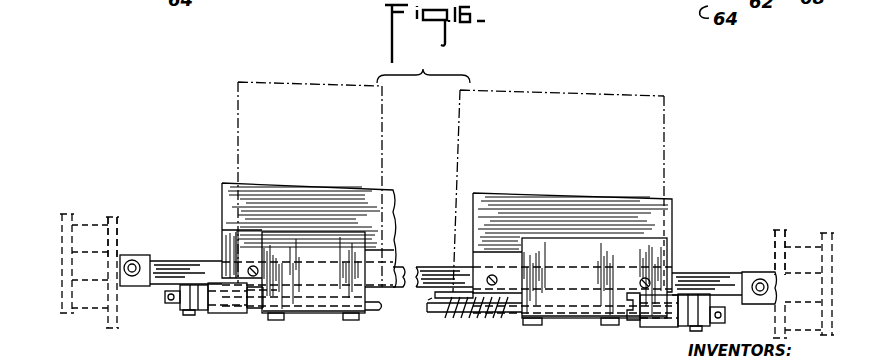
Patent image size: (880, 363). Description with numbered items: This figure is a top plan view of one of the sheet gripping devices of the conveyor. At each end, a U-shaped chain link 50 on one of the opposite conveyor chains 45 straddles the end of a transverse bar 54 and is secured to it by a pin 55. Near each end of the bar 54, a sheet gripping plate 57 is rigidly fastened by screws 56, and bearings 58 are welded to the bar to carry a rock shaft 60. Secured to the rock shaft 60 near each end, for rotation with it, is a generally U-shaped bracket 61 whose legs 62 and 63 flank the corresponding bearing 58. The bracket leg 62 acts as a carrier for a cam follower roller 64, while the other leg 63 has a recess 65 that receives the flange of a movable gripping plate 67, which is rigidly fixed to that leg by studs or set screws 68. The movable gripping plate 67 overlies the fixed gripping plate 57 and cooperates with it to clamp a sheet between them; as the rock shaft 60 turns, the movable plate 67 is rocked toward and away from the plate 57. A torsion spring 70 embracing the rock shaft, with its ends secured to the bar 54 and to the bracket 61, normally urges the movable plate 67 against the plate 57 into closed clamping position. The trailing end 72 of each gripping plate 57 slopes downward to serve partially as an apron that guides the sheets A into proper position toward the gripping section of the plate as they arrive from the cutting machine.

The conveyor chains 45 is at (90, 300).
The chain links 50 is at (120, 226).
The bar 54 is at (426, 266).
The pin 55 is at (134, 278).
The screws 56 is at (494, 286).
The sheet gripping plate 57 is at (240, 180).
The bearings 58 is at (228, 314).
The rock shaft 60 is at (427, 304).
The bracket 61 is at (334, 330).
The bracket leg 62 is at (168, 306).
The bracket leg 63 is at (631, 324).
The cam follower roller 64 is at (188, 312).
The recess 65 is at (318, 312).
The movable gripping plate 67 is at (325, 240).
The studs or set screws 68 is at (276, 321).
The torsion spring 70 is at (481, 320).
The trailing end 72 is at (303, 192).
The sheets A is at (652, 172).